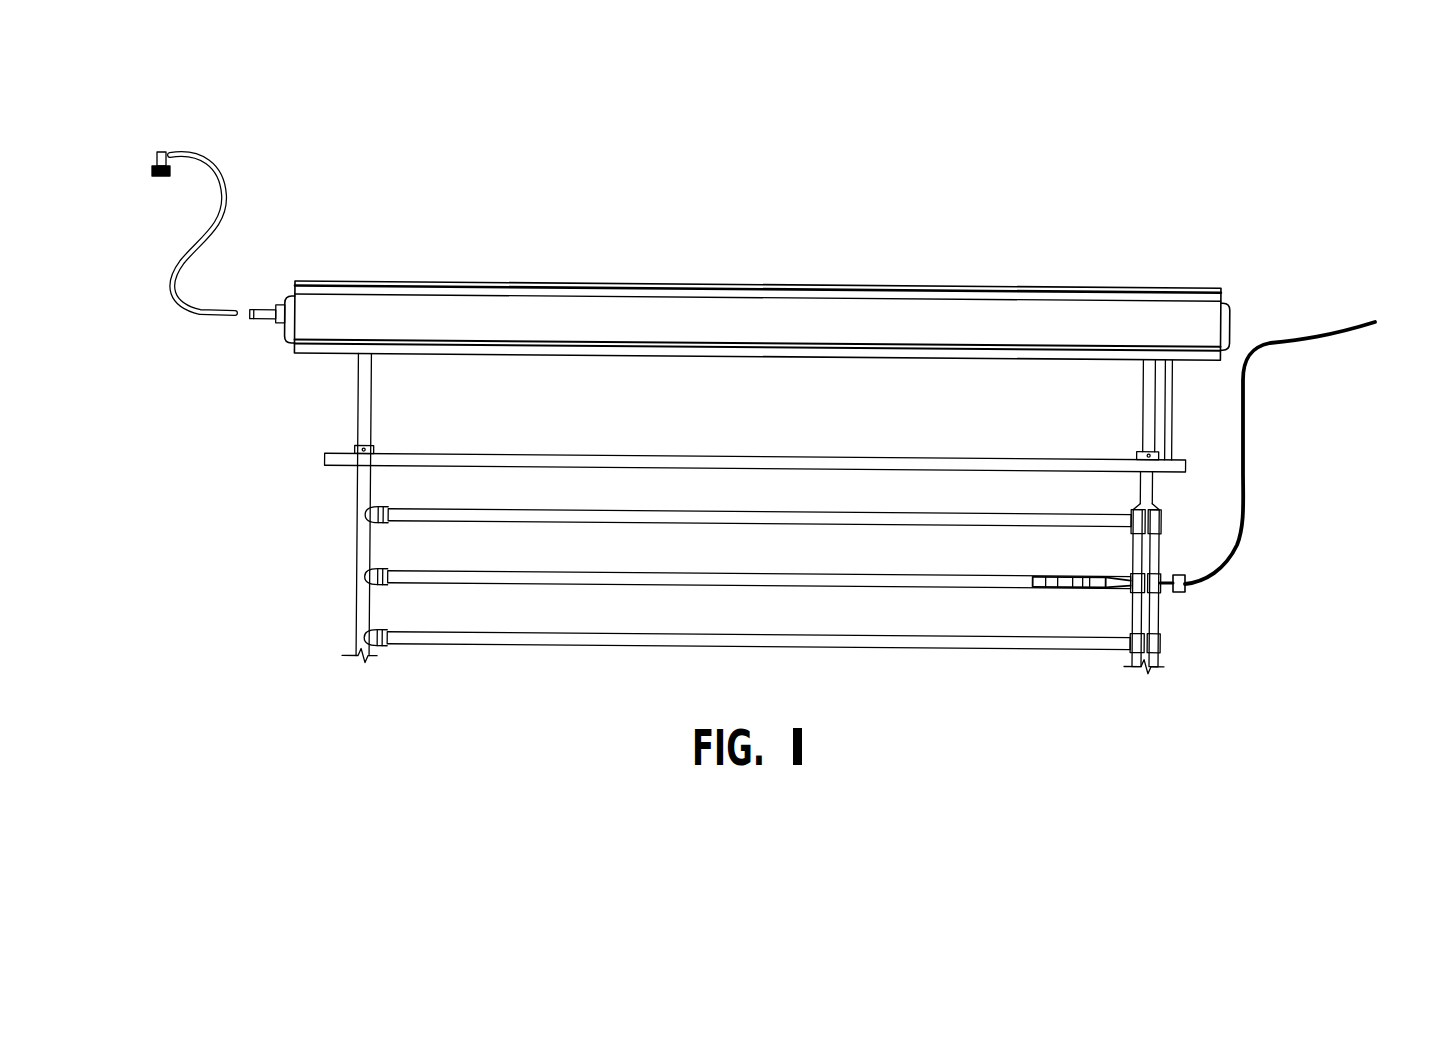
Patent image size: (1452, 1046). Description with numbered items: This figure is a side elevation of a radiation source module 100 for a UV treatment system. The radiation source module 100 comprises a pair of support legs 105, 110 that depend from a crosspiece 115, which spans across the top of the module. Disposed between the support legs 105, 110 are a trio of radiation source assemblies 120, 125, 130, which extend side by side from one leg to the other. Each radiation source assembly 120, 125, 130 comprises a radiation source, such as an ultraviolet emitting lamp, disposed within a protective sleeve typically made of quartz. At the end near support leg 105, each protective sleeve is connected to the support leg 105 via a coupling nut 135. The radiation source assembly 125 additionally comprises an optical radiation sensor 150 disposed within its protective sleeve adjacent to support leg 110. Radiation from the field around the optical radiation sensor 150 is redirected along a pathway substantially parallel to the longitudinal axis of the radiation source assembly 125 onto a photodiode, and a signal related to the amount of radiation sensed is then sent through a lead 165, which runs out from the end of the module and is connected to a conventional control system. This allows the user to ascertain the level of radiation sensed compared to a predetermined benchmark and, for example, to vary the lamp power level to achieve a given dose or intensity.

The radiation source module 100 is at (922, 222).
The support leg 105 is at (367, 403).
The support leg 110 is at (1143, 405).
The crosspiece 115 is at (790, 333).
The radiation source assembly 120 is at (420, 513).
The radiation source assembly 125 is at (425, 577).
The radiation source assembly 130 is at (422, 637).
The coupling nut 135 is at (377, 644).
The optical radiation sensor 150 is at (1100, 584).
The lead 165 is at (1243, 446).